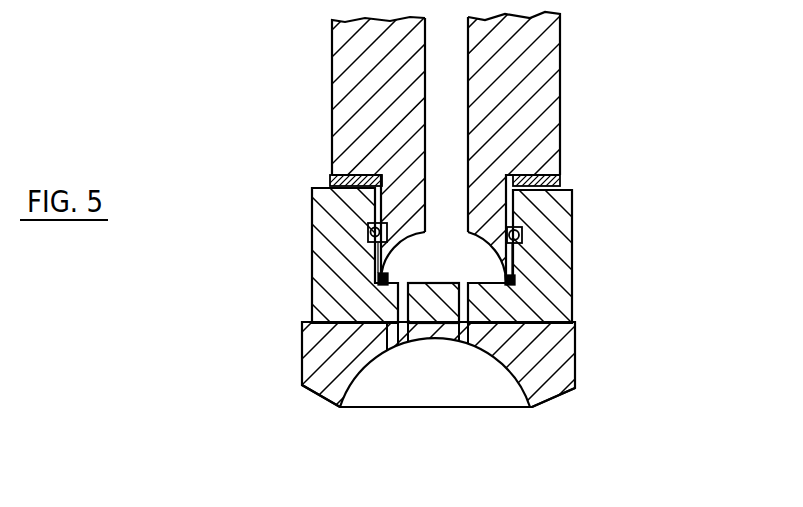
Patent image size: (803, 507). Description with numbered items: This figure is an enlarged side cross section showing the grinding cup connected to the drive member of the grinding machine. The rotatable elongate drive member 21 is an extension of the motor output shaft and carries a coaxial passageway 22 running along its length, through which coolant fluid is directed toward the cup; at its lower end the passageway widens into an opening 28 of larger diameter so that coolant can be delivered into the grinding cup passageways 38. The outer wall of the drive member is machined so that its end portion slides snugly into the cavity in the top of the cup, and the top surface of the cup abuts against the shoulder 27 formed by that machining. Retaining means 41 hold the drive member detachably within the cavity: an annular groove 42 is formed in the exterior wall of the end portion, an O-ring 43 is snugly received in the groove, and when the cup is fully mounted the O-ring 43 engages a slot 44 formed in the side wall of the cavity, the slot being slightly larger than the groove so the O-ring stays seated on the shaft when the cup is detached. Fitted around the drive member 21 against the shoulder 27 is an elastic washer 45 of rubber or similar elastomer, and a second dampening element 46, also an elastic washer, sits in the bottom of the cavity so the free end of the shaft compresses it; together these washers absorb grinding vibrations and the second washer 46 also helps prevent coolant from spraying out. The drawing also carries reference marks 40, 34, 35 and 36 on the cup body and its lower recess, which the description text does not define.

The elongate drive member 21 is at (332, 50).
The coaxial passageway 22 is at (448, 43).
The shoulder 27 is at (345, 145).
The opening 28 is at (397, 258).
The elastic washer 45 is at (330, 178).
The retaining means 41 is at (355, 197).
The O-ring 43 is at (372, 235).
The annular groove 42 is at (368, 228).
The slot 44 is at (380, 279).
The second dampening element 46 is at (386, 345).
The passage 40 is at (463, 340).
The grinding cup passageways 38 is at (537, 287).
The base flange 34 is at (533, 405).
The chamfer 35 is at (563, 393).
The recess 36 is at (522, 385).